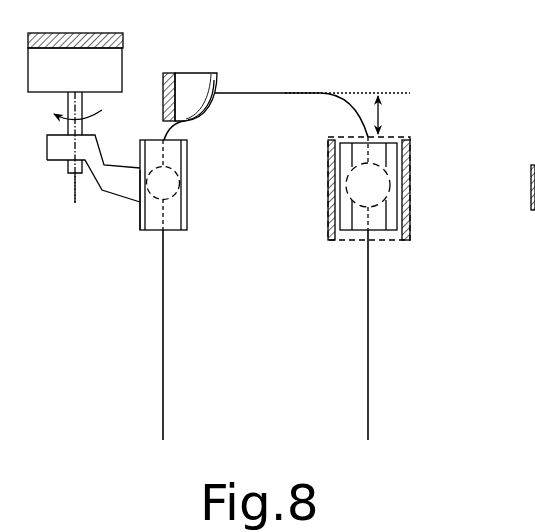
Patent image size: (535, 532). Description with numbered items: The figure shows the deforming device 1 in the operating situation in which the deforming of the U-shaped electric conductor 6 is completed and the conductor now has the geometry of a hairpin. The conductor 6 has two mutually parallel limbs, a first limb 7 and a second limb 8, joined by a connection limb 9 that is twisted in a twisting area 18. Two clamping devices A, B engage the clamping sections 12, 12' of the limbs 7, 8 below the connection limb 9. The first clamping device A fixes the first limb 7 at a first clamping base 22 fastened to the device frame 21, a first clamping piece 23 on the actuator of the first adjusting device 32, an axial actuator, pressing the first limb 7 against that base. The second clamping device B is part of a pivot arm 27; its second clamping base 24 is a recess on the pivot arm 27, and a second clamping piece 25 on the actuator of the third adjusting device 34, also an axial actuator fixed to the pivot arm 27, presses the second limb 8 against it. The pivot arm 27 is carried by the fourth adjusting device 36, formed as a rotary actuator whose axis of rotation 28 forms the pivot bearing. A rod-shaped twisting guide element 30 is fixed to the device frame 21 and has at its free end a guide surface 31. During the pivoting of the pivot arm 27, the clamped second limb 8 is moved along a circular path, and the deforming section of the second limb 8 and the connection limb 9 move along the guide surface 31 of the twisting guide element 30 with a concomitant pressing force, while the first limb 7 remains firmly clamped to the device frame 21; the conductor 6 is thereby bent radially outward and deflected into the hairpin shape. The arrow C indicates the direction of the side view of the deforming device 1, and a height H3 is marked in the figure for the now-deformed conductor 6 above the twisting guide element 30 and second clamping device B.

The deforming device 1 is at (101, 299).
The electric conductor 6 is at (155, 378).
The first limb 7 is at (368, 353).
The second limb 8 is at (163, 355).
The connection limb 9 is at (277, 93).
The clamping section 12 is at (342, 255).
The clamping section 12' is at (201, 254).
The twisting area 18 is at (197, 129).
The device frame 21 is at (362, 240).
The first clamping base 22 is at (392, 218).
The first clamping piece 23 is at (377, 230).
The second clamping base 24 is at (138, 212).
The second clamping piece 25 is at (158, 228).
The pivot arm 27 is at (108, 194).
The axis of rotation 28 is at (73, 203).
The twisting guide element 30 is at (188, 73).
The guide surface 31 is at (217, 82).
The first adjusting device 32 is at (358, 195).
The third adjusting device 34 is at (154, 191).
The fourth adjusting device 36 is at (64, 84).
The first clamping device A is at (318, 217).
The second clamping device B is at (205, 203).
The side view C is at (520, 40).
The height H3 is at (381, 118).